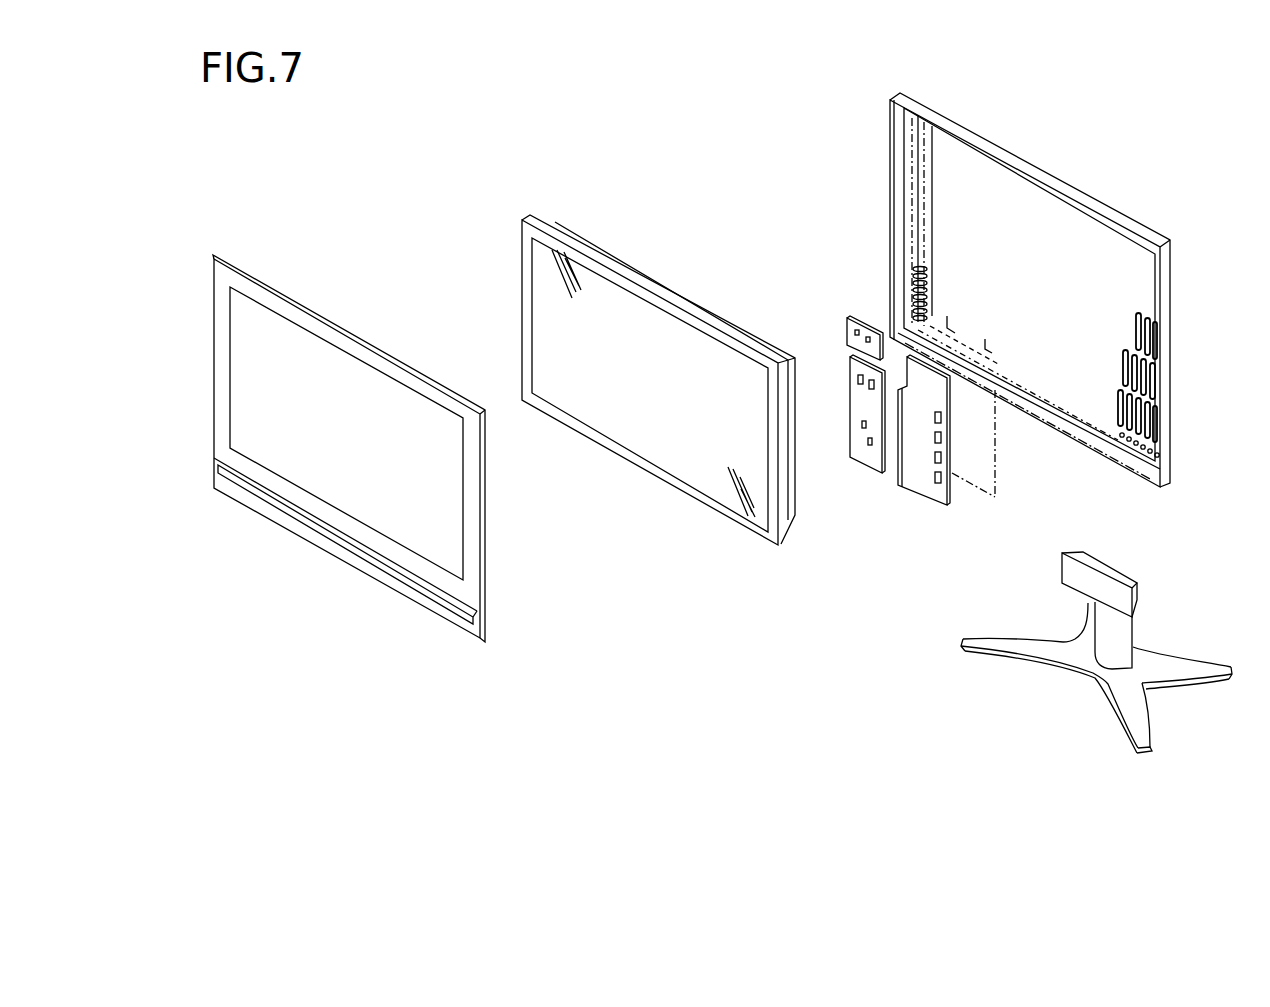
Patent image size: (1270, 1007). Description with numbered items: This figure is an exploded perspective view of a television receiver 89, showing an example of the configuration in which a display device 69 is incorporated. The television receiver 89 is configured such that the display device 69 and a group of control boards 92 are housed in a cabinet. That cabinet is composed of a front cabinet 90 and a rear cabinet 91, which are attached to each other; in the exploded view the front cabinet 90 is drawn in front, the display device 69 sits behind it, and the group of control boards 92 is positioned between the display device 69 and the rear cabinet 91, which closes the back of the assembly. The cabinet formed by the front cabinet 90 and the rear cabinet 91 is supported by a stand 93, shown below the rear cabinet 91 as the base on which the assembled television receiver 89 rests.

The television receiver 89 is at (681, 158).
The front cabinet 90 is at (332, 322).
The display device 69 is at (610, 253).
The rear cabinet 91 is at (1027, 158).
The group of control boards 92 is at (829, 319).
The stand 93 is at (1132, 627).